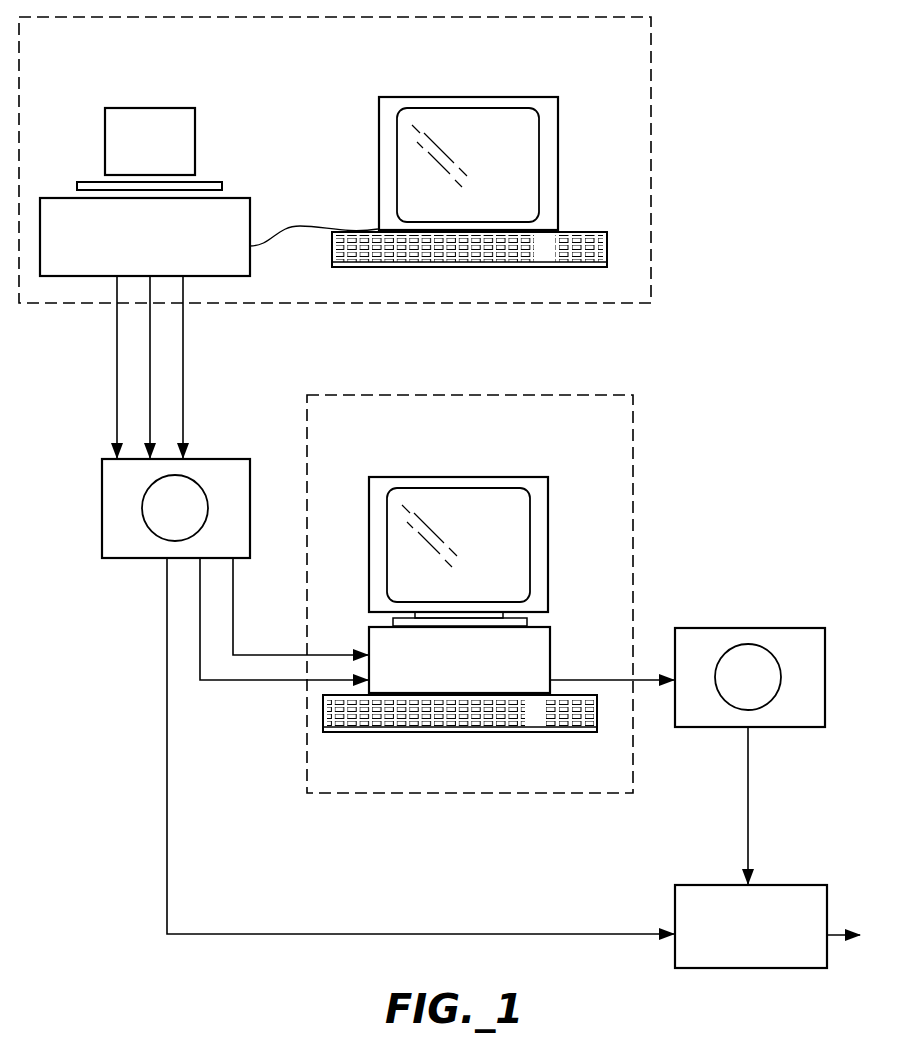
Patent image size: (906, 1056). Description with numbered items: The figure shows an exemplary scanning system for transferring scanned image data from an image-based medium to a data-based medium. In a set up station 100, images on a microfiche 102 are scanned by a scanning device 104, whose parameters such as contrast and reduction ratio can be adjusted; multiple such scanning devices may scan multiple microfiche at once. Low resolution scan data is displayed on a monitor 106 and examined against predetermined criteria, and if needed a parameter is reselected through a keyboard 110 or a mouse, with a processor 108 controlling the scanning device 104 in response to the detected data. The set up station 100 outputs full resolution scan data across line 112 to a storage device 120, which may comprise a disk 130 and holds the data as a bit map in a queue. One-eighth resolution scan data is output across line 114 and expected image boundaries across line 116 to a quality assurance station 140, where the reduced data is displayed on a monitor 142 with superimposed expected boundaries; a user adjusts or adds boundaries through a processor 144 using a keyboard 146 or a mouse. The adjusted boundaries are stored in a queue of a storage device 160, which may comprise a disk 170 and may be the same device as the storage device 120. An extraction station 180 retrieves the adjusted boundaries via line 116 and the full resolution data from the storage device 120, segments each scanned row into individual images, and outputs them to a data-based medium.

The set up station 100 is at (651, 75).
The microfiche 102 is at (213, 182).
The scanning device 104 is at (157, 107).
The monitor 106 is at (478, 97).
The processor 108 is at (254, 230).
The keyboard 110 is at (572, 232).
The line 112 is at (117, 375).
The line 114 is at (150, 427).
The line 116 is at (183, 383).
The storage device 120 is at (200, 459).
The disk 130 is at (142, 514).
The quality assurance station 140 is at (633, 473).
The monitor 142 is at (468, 477).
The processor 144 is at (553, 648).
The keyboard 146 is at (465, 732).
The storage device 160 is at (740, 628).
The disk 170 is at (748, 710).
The extraction station 180 is at (764, 885).